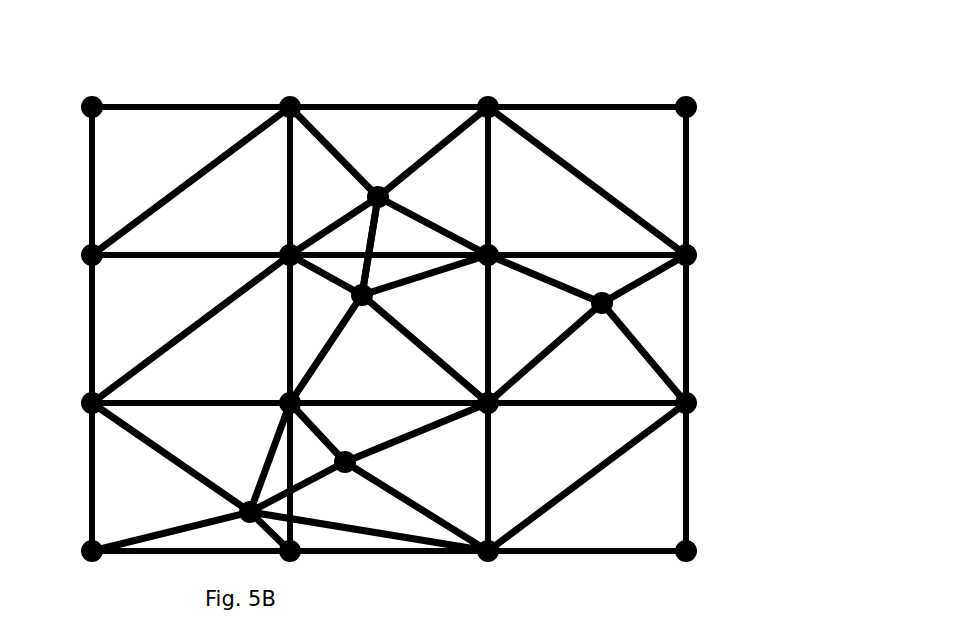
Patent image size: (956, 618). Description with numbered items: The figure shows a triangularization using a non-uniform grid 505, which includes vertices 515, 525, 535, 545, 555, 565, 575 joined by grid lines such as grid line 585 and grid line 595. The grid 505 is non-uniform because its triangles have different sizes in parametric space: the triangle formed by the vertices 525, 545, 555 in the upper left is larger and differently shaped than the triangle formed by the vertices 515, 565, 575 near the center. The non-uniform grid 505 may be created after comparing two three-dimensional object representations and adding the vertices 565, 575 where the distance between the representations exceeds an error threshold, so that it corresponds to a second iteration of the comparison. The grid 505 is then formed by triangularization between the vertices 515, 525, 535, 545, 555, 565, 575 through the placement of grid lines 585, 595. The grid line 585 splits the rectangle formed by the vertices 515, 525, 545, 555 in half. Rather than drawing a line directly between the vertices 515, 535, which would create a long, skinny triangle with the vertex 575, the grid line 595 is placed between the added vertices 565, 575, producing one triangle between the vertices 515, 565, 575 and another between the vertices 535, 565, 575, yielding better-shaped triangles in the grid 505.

The non-uniform grid 505 is at (586, 68).
The vertex 555 is at (90, 97).
The vertex 525 is at (289, 97).
The grid line 585 is at (185, 183).
The vertex 545 is at (88, 245).
The vertex 515 is at (287, 243).
The vertex 565 is at (383, 192).
The vertex 535 is at (483, 245).
The grid line 595 is at (365, 259).
The vertex 575 is at (376, 287).